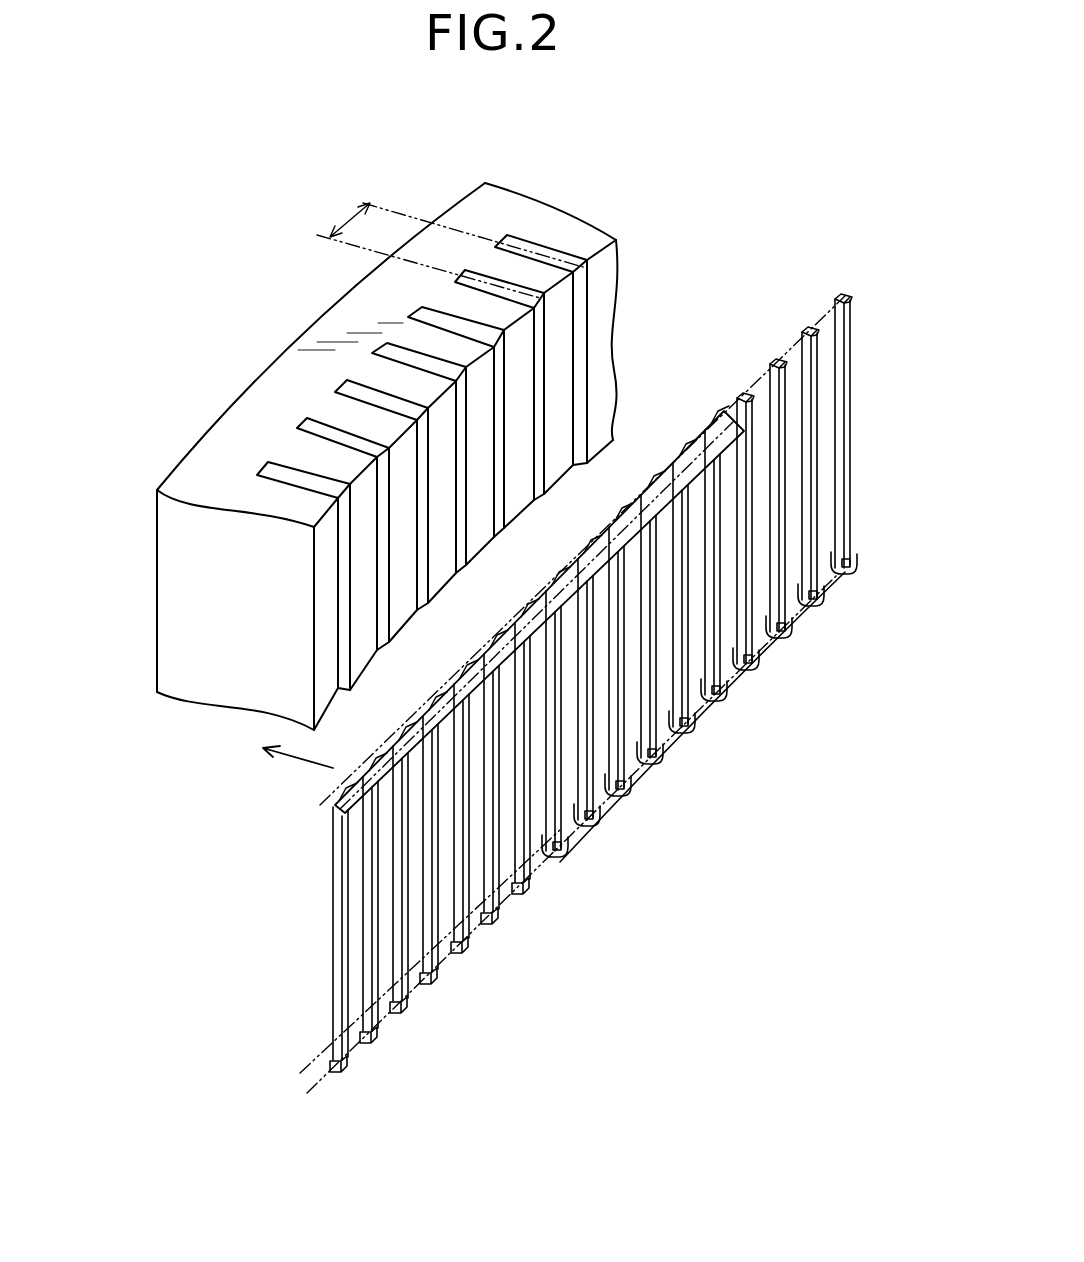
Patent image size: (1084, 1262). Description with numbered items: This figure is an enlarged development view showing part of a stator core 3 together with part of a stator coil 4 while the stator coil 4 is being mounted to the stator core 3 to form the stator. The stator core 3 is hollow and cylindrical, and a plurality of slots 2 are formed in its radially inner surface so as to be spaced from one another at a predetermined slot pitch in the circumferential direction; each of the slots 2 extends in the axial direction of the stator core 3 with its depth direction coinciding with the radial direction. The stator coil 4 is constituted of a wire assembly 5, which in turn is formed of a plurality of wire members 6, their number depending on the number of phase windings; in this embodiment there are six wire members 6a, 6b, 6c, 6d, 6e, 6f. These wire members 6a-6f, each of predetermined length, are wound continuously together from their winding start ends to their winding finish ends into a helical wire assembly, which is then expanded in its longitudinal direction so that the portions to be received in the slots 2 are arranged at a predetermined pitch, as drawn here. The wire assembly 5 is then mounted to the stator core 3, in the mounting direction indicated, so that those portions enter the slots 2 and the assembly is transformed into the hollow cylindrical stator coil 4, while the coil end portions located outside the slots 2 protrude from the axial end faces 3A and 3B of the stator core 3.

The slots 2 is at (540, 387).
The stator core 3 is at (548, 191).
The axial end face 3A is at (573, 230).
The axial end face 3B is at (227, 710).
The stator coil 4 is at (845, 299).
The wire assembly 5 is at (543, 1058).
The wire members 6 is at (426, 1113).
The wire member 6a is at (343, 1052).
The wire member 6b is at (378, 1023).
The wire member 6c is at (412, 992).
The wire member 6d is at (447, 960).
The wire member 6e is at (482, 930).
The wire member 6f is at (512, 900).